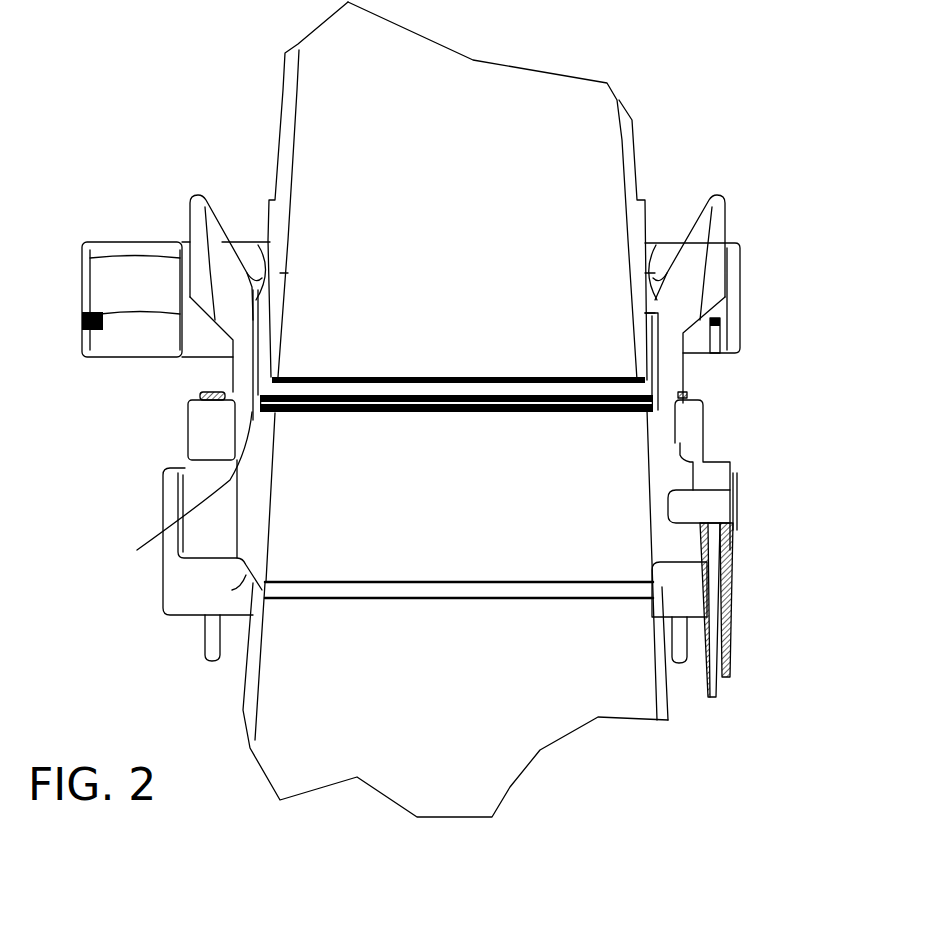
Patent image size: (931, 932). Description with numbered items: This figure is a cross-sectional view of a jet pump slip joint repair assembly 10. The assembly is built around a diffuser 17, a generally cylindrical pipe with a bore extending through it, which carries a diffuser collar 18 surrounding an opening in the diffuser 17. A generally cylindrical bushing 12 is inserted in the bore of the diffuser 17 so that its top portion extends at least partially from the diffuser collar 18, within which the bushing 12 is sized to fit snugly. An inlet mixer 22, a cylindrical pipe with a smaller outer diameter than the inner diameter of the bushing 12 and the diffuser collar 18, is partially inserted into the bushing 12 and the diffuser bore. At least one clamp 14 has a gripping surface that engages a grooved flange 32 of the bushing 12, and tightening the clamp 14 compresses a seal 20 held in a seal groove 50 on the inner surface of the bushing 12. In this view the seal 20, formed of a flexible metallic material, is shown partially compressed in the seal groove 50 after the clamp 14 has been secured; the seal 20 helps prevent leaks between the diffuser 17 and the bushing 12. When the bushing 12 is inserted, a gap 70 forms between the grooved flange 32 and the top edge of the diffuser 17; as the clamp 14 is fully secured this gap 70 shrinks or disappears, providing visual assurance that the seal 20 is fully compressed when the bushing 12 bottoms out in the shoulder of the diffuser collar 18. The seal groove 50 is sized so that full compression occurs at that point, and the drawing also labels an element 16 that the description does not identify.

The jet pump slip joint repair assembly 10 is at (168, 441).
The bushing 12 is at (668, 377).
The clamp 14 is at (200, 430).
The latch 16 is at (142, 268).
The diffuser 17 is at (650, 545).
The diffuser collar 18 is at (670, 372).
The seal 20 is at (606, 410).
The inlet mixer 22 is at (643, 218).
The grooved flange 32 is at (257, 270).
The seal groove 50 is at (181, 488).
The gap 70 is at (713, 328).